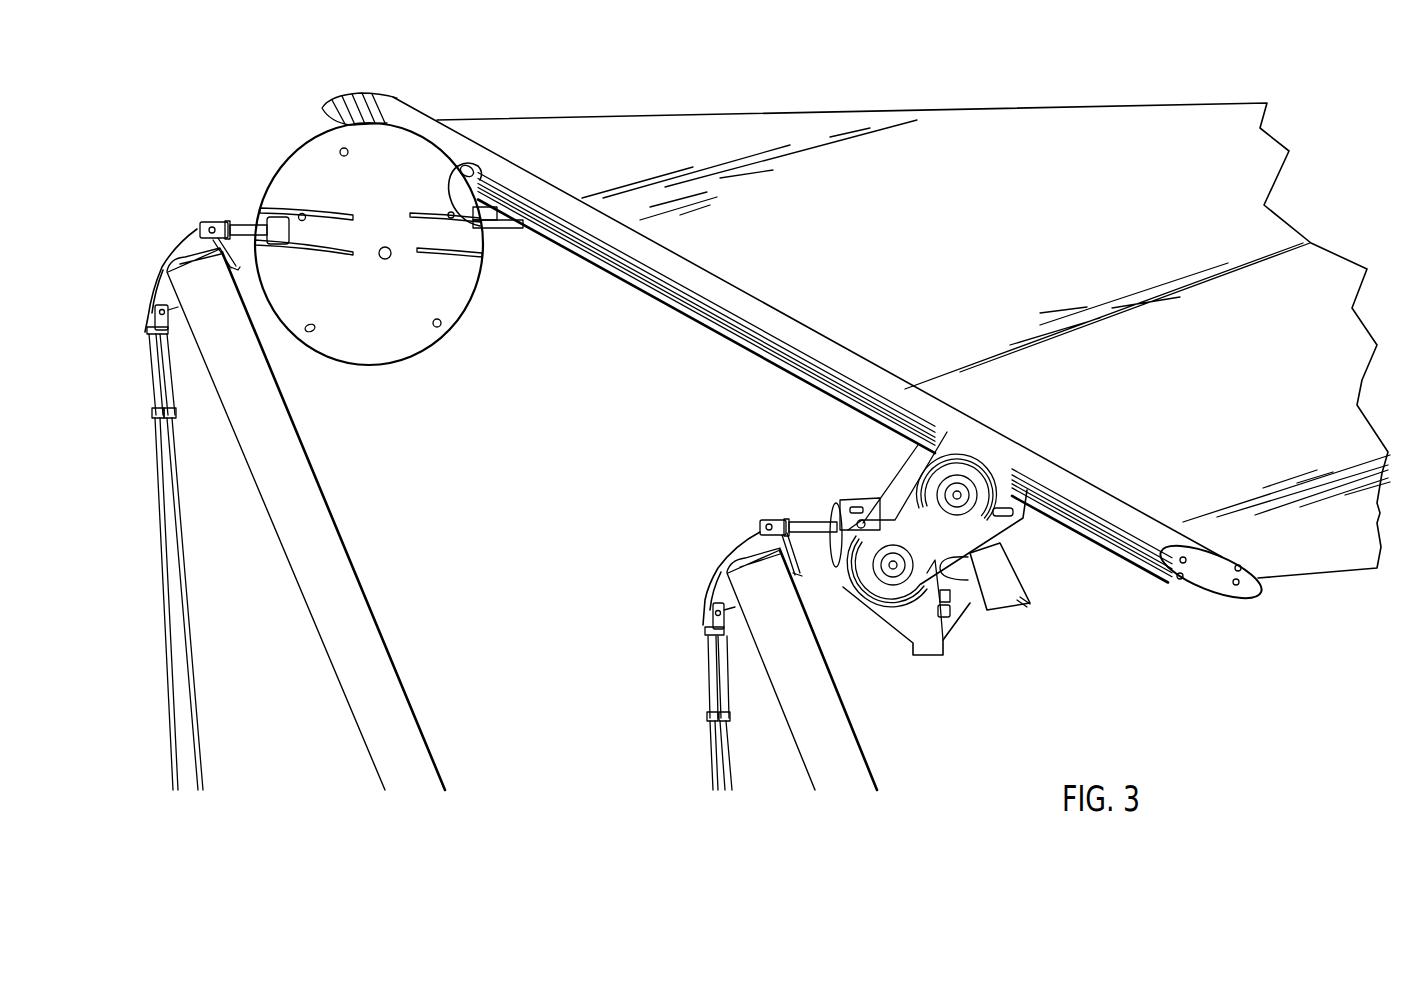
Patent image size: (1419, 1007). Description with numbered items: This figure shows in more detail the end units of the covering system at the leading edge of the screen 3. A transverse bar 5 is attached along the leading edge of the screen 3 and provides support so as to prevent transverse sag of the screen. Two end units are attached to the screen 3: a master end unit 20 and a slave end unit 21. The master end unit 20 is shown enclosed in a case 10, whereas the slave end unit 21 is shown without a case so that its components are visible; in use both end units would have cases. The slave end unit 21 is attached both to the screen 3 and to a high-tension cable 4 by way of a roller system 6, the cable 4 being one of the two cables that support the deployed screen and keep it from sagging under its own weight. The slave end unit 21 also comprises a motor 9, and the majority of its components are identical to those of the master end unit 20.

The screen 3 is at (1055, 123).
The cable 4 is at (812, 528).
The transverse bar 5 is at (750, 305).
The roller system 6 is at (890, 548).
The motor 9 is at (1017, 577).
The case 10 is at (415, 338).
The master end unit 20 is at (266, 180).
The slave end unit 21 is at (980, 642).